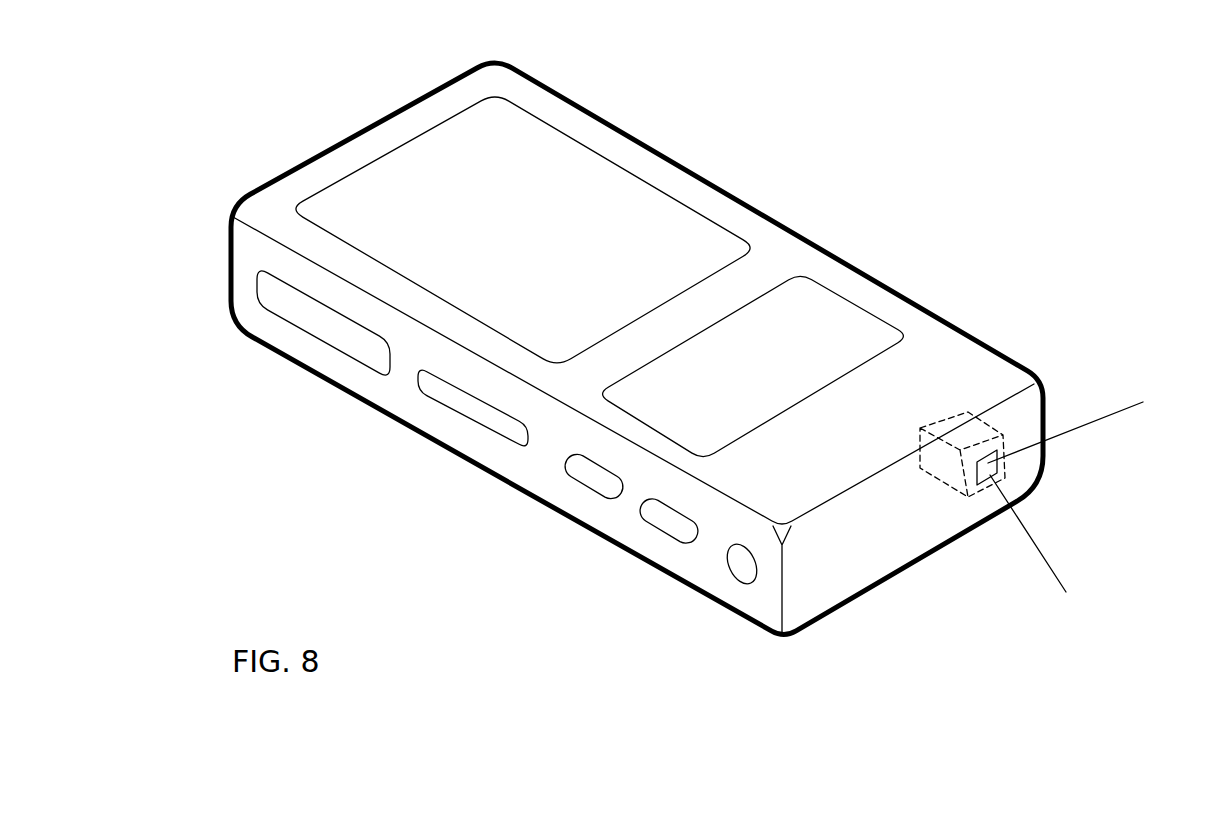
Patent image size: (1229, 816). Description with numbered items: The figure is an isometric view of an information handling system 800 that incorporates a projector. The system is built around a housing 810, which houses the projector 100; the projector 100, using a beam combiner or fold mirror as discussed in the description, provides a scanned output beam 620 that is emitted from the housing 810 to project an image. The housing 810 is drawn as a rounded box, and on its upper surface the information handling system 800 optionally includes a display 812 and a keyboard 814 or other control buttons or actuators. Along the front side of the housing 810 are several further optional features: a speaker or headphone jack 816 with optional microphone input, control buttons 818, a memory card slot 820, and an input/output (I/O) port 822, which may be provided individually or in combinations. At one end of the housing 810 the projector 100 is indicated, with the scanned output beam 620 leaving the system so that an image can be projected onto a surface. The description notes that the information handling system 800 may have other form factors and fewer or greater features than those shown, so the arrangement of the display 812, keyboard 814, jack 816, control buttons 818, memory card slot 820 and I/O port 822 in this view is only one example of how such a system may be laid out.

The information handling system 800 is at (826, 128).
The housing 810 is at (625, 133).
The display 812 is at (407, 178).
The keyboard 814 is at (820, 308).
The speaker or headphone jack 816 is at (745, 561).
The control buttons 818 is at (650, 514).
The memory card slot 820 is at (433, 391).
The input/output (I/O) port 822 is at (265, 288).
The projector 100 is at (960, 410).
The scanned output beam 620 is at (1108, 487).